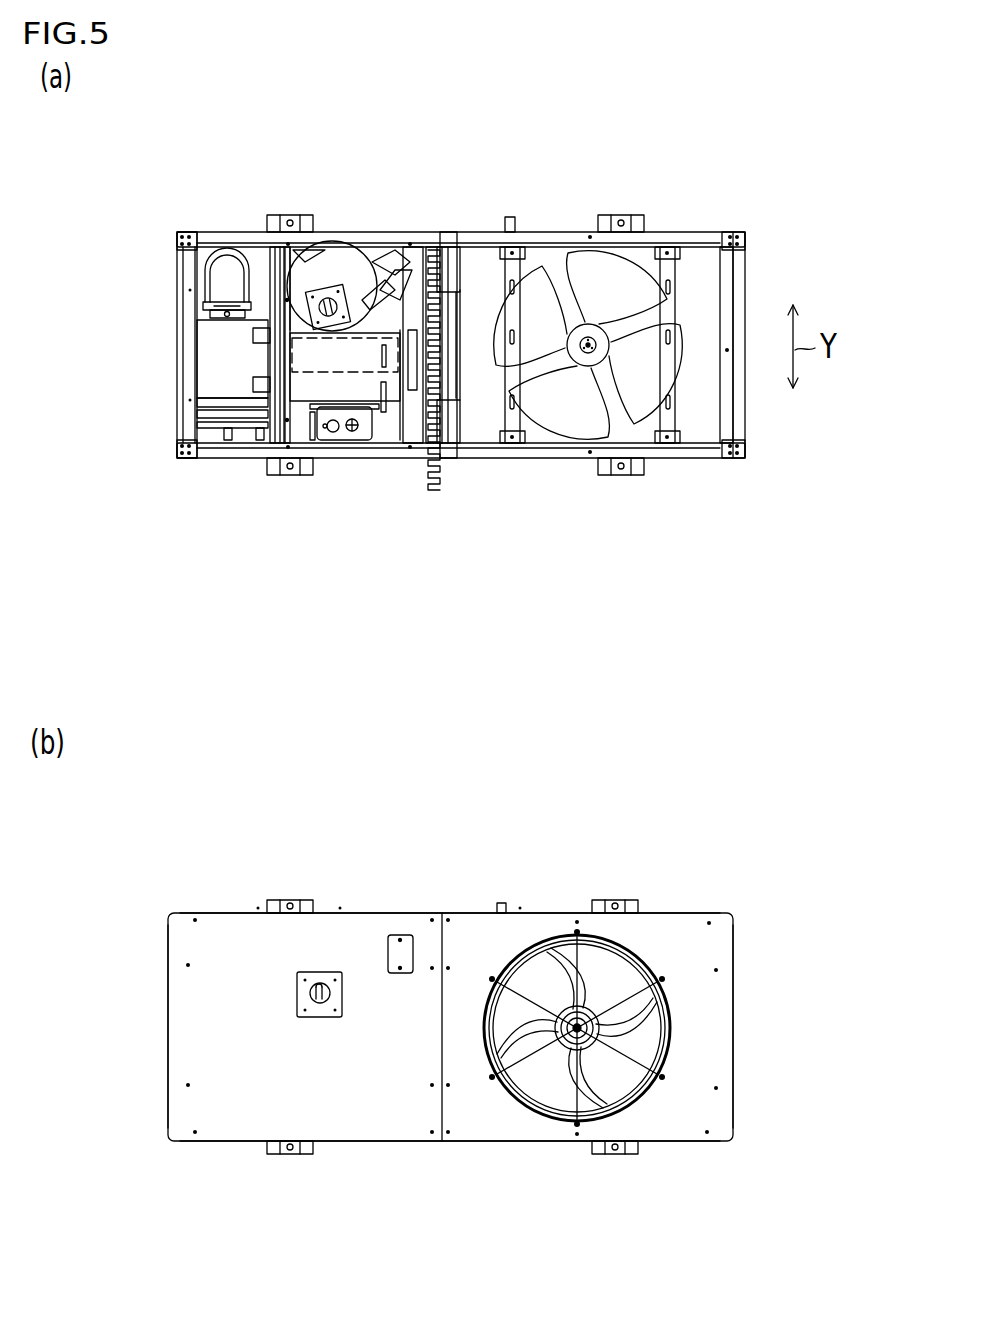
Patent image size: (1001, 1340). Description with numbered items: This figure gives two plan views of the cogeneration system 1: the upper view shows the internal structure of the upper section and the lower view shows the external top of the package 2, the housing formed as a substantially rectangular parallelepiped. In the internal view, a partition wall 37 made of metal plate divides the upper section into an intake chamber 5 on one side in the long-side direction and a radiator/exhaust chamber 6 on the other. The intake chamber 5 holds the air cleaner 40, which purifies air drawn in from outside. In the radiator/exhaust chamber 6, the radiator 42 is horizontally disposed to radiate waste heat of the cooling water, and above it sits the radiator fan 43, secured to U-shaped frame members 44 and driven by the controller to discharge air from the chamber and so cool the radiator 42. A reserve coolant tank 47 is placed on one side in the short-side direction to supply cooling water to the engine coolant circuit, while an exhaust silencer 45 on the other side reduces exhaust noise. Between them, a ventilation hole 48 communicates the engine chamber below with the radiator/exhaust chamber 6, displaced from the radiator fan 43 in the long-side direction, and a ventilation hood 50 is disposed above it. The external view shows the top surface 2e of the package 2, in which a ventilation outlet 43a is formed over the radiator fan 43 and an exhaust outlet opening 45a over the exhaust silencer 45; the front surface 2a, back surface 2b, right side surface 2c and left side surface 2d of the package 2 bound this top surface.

The cogeneration system 1 is at (740, 180).
The package 2 is at (735, 1043).
The front surface 2a is at (458, 1142).
The back surface 2b is at (462, 913).
The right side surface 2c is at (735, 950).
The left side surface 2d is at (168, 985).
The top surface 2e is at (690, 998).
The intake chamber 5 is at (265, 268).
The radiator/exhaust chamber 6 is at (700, 275).
The partition wall 37 is at (278, 260).
The air cleaner 40 is at (215, 354).
The radiator 42 is at (482, 423).
The radiator fan 43 is at (598, 262).
The ventilation outlet 43a is at (605, 973).
The U-shaped frame members 44 is at (667, 428).
The exhaust silencer 45 is at (337, 265).
The exhaust outlet opening 45a is at (320, 985).
The reserve coolant tank 47 is at (352, 433).
The ventilation hole 48 is at (317, 356).
The ventilation hood 50 is at (340, 383).